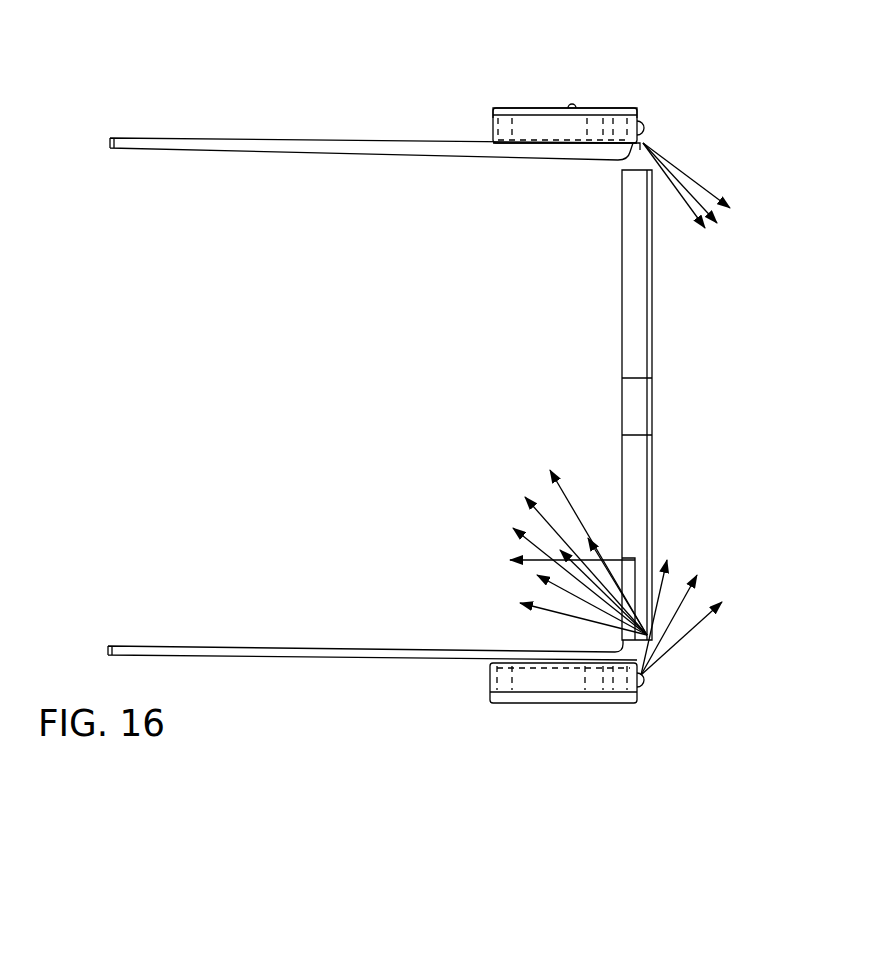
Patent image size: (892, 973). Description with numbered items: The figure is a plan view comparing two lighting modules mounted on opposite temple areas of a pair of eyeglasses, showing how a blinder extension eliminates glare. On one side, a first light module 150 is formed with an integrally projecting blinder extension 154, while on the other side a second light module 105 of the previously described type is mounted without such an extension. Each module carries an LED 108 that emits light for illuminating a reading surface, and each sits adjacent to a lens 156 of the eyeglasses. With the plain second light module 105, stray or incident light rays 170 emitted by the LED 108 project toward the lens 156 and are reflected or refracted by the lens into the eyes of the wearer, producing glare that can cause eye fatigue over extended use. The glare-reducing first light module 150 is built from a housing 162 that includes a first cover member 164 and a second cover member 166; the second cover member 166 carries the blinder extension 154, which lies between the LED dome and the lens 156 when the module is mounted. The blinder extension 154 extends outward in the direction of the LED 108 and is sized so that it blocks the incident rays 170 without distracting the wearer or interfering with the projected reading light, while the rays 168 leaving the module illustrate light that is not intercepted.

The second light module 105 is at (486, 692).
The LED 108 is at (648, 127).
The first light module 150 is at (482, 118).
The blinder extension 154 is at (627, 168).
The lens 156 is at (648, 352).
The housing 162 is at (637, 70).
The first cover member 164 is at (527, 112).
The second cover member 166 is at (528, 143).
The upper light rays 168 is at (745, 212).
The incident light rays 170 is at (735, 592).